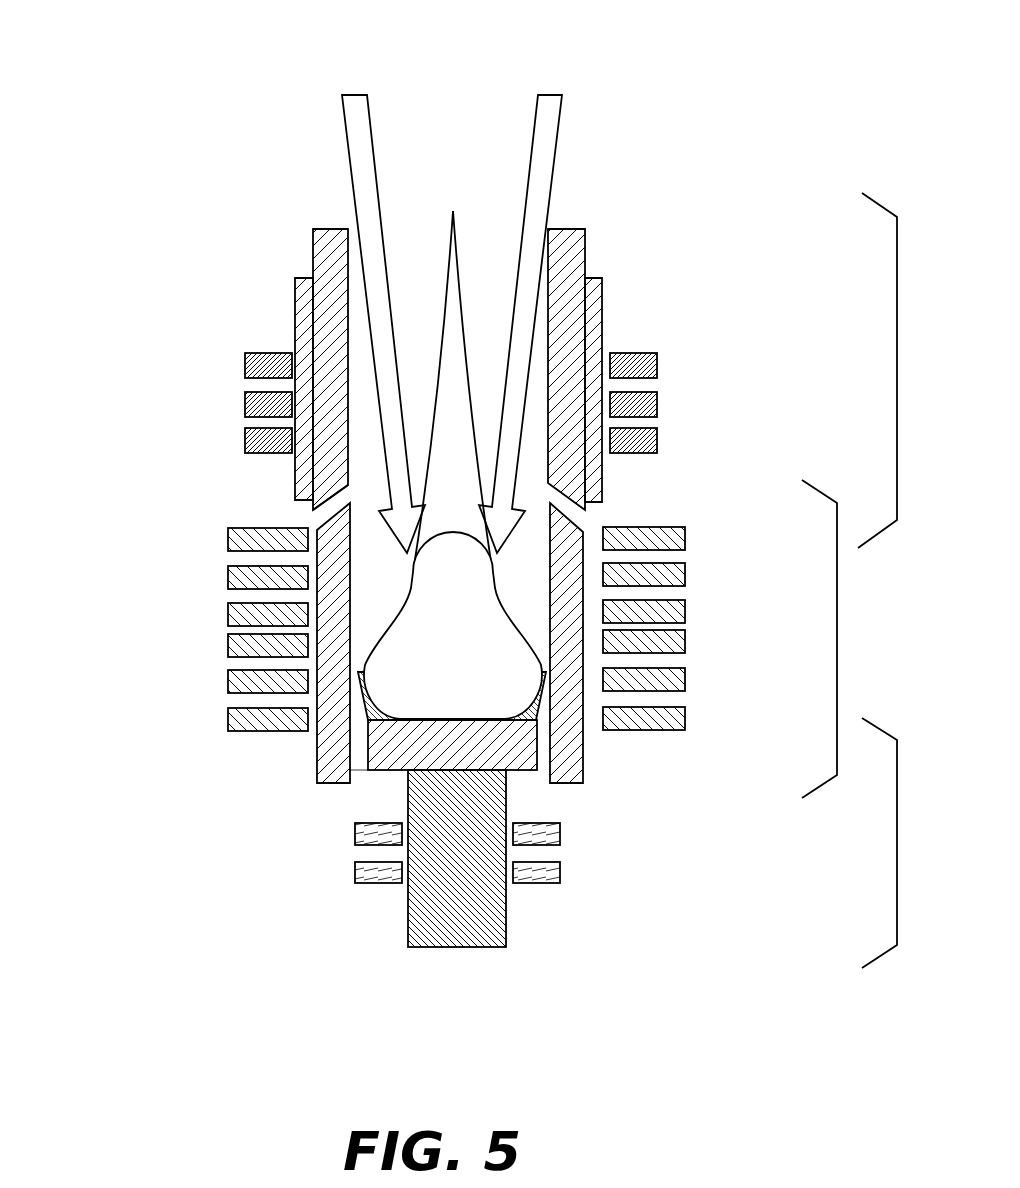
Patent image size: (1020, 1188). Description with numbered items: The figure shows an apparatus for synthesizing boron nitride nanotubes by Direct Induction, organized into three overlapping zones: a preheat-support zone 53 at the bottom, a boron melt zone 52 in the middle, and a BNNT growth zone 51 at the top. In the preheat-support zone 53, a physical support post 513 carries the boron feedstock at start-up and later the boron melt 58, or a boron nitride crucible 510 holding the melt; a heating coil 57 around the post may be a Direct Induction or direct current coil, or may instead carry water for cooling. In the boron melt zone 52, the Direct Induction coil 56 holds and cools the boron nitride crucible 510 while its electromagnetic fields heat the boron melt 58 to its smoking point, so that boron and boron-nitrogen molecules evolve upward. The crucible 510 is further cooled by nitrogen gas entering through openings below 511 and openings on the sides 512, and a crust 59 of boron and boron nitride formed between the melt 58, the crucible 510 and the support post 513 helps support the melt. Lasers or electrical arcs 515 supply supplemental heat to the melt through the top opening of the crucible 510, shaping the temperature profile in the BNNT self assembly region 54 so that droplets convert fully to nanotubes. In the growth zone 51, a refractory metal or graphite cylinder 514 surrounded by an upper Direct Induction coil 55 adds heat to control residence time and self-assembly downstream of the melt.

The BNNT growth zone 51 is at (897, 382).
The boron melt zone 52 is at (837, 628).
The preheat-support zone 53 is at (897, 838).
The BNNT self assembly region 54 is at (450, 258).
The upper Direct Induction coil 55 is at (244, 367).
The Direct Induction coil 56 is at (227, 540).
The heating coil 57 is at (560, 834).
The boron melt 58 is at (365, 722).
The crust 59 is at (523, 735).
The boron nitride crucible 510 is at (328, 482).
The openings below 511 is at (360, 772).
The openings on the sides 512 is at (566, 503).
The physical support post 513 is at (407, 940).
The refractory metal or graphite cylinder 514 is at (603, 293).
The lasers or electrical arcs 515 is at (366, 95).